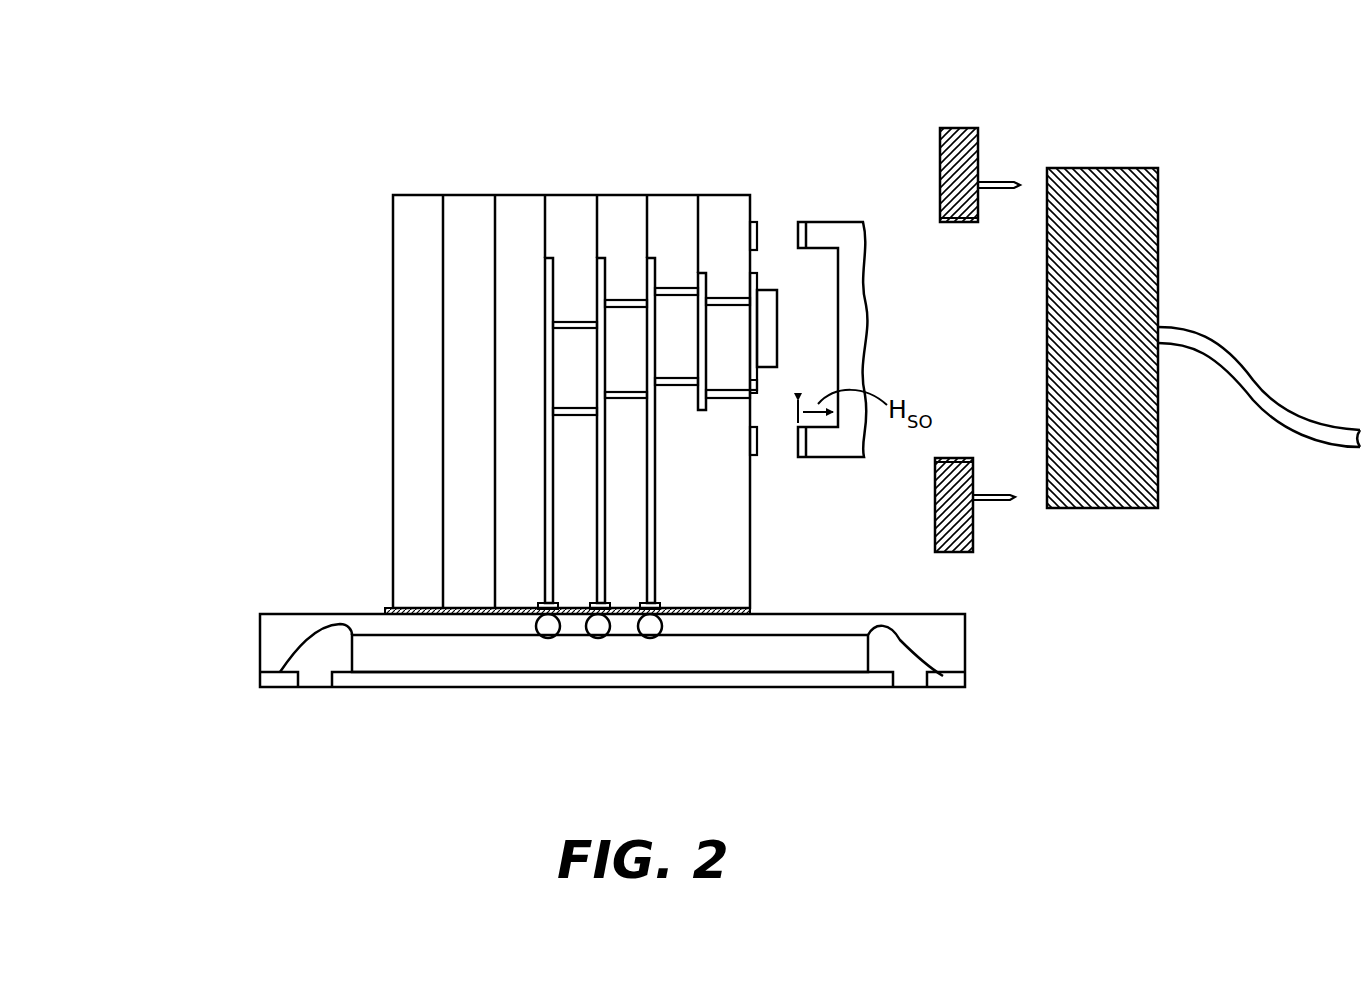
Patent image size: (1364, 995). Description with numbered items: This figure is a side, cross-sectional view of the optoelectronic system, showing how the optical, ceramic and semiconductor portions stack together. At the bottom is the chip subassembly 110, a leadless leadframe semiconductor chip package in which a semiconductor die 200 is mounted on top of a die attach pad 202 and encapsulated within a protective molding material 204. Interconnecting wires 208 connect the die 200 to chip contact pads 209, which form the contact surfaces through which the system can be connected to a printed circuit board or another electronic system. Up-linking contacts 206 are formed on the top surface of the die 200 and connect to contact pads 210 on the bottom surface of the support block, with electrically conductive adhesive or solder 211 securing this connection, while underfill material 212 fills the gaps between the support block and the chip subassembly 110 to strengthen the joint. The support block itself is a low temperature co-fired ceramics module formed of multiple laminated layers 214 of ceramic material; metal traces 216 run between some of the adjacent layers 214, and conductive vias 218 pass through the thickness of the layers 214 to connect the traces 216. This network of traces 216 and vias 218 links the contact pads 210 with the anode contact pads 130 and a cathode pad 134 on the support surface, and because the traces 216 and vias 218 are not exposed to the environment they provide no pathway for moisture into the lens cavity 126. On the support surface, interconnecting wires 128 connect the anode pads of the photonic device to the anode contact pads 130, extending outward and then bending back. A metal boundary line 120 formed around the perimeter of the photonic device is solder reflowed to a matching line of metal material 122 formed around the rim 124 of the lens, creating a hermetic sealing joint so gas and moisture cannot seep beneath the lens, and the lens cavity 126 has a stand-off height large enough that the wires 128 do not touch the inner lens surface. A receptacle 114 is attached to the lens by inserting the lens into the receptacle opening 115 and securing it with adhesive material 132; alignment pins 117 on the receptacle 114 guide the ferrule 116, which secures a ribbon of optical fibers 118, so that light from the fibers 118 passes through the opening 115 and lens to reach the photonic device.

The chip subassembly 110 is at (248, 612).
The receptacle 114 is at (960, 128).
The receptacle opening 115 is at (963, 295).
The ferrule 116 is at (1097, 168).
The alignment pins 117 is at (998, 180).
The optical fibers 118 is at (1208, 330).
The metal boundary line 120 is at (757, 455).
The line of metal material 122 is at (797, 455).
The rim 124 is at (812, 219).
The lens cavity 126 is at (807, 337).
The interconnecting wires 128 is at (756, 396).
The anode contact pads 130 is at (755, 396).
The adhesive material 132 is at (966, 223).
The cathode pad 134 is at (750, 276).
The semiconductor die 200 is at (377, 635).
The die attach pad 202 is at (517, 687).
The protective molding material 204 is at (965, 637).
The up-linking contacts 206 is at (560, 624).
The interconnecting wires 208 is at (903, 632).
The chip contact pads 209 is at (997, 725).
The contact pads 210 is at (662, 607).
The electrically conductive adhesive or solder 211 is at (662, 624).
The underfill material 212 is at (750, 613).
The laminated layers 214 is at (477, 195).
The metal traces 216 is at (597, 283).
The conductive vias 218 is at (677, 288).